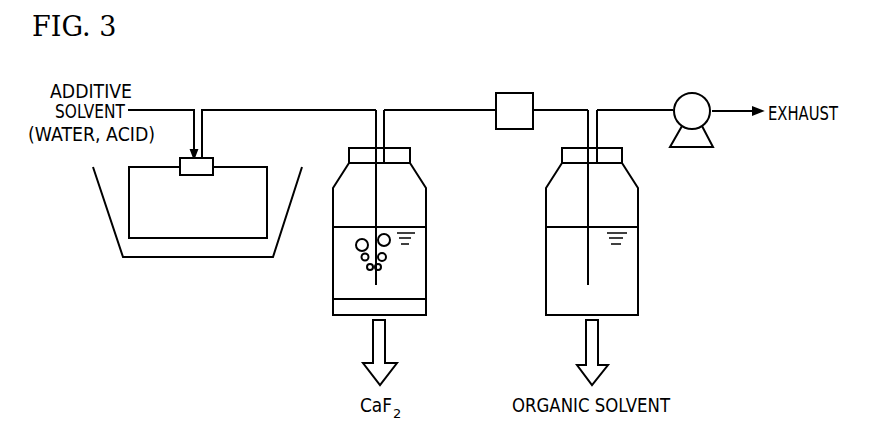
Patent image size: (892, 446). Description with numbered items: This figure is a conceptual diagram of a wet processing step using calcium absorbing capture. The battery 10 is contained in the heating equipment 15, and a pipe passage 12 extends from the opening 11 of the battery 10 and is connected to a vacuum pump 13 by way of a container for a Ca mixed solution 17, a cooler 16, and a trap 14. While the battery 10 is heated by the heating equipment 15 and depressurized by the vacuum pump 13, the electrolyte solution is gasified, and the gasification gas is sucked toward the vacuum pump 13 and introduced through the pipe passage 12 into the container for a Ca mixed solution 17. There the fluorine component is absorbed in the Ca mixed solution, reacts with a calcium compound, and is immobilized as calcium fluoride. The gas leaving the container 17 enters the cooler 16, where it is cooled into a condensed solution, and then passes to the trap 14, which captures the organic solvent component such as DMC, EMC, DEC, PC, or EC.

The battery 10 is at (232, 225).
The opening 11 is at (213, 165).
The pipe passage 12 is at (248, 110).
The vacuum pump 13 is at (692, 93).
The trap 14 is at (560, 315).
The heating equipment 15 is at (152, 257).
The cooler 16 is at (520, 93).
The container for a Ca mixed solution 17 is at (347, 315).